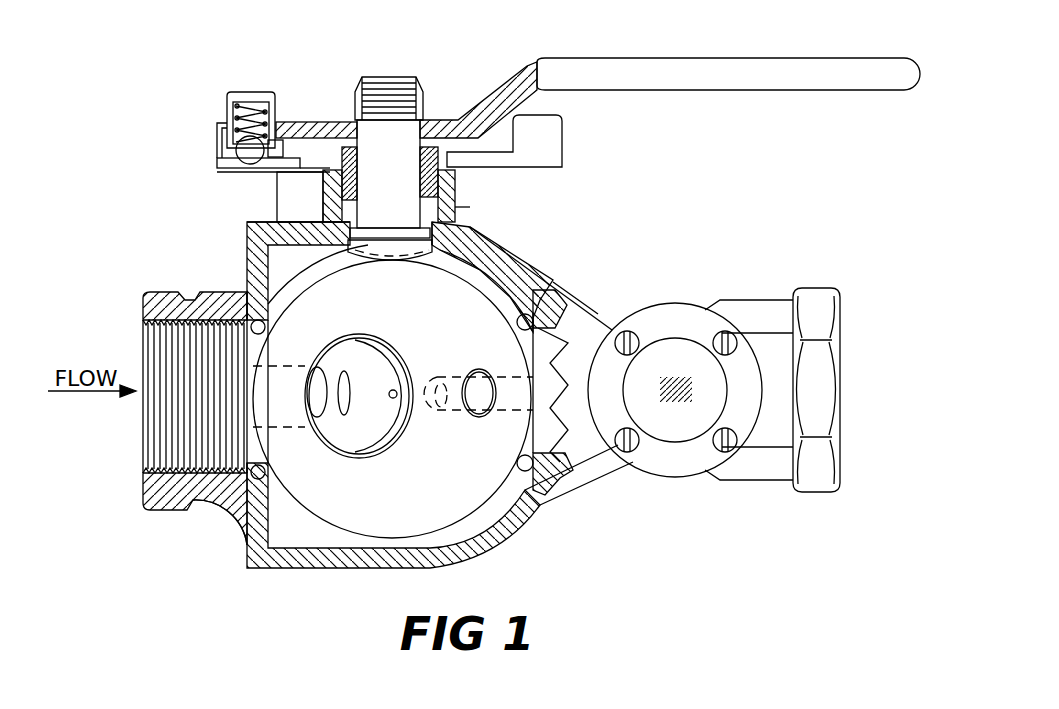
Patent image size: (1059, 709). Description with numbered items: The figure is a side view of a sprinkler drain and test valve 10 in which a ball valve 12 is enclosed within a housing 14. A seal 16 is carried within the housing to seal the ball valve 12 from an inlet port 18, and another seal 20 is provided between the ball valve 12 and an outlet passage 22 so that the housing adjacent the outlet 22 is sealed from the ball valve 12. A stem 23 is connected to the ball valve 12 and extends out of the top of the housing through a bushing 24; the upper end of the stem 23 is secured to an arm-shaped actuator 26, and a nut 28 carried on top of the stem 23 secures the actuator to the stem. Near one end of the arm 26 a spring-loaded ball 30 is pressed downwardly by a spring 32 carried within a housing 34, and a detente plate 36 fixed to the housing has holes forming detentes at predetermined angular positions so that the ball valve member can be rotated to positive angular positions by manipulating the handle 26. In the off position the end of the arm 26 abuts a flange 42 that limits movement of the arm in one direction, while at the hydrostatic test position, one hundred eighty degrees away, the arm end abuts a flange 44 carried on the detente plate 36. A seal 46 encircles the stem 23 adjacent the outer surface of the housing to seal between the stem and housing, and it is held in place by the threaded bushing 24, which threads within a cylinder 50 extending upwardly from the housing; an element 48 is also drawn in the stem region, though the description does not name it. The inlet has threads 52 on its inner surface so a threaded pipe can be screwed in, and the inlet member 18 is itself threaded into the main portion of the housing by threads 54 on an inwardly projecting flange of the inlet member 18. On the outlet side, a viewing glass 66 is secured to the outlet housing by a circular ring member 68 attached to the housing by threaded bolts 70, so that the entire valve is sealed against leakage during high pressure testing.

The sprinkler drain and test valve 10 is at (672, 292).
The ball valve 12 is at (258, 285).
The housing 14 is at (527, 256).
The seal 16 is at (242, 522).
The inlet port 18 is at (150, 410).
The seal 20 is at (532, 497).
The outlet passage 22 is at (826, 378).
The stem 23 is at (403, 153).
The bushing 24 is at (352, 133).
The actuator 26 is at (557, 70).
The nut 28 is at (411, 78).
The spring-loaded ball 30 is at (243, 158).
The spring 32 is at (240, 95).
The housing 34 is at (262, 90).
The detente plate 36 is at (232, 170).
The flange 42 is at (215, 130).
The flange 44 is at (552, 137).
The seal 46 is at (462, 208).
The stem packing 48 is at (418, 189).
The cylinder 50 is at (457, 183).
The threads 52 is at (152, 296).
The threads 54 is at (247, 268).
The viewing glass 66 is at (688, 413).
The circular ring member 68 is at (692, 318).
The threaded bolts 70 is at (633, 447).